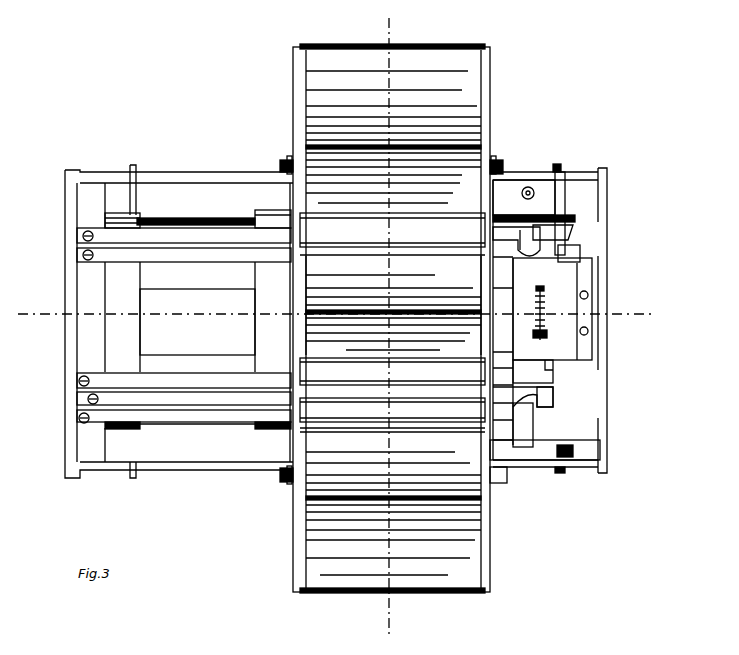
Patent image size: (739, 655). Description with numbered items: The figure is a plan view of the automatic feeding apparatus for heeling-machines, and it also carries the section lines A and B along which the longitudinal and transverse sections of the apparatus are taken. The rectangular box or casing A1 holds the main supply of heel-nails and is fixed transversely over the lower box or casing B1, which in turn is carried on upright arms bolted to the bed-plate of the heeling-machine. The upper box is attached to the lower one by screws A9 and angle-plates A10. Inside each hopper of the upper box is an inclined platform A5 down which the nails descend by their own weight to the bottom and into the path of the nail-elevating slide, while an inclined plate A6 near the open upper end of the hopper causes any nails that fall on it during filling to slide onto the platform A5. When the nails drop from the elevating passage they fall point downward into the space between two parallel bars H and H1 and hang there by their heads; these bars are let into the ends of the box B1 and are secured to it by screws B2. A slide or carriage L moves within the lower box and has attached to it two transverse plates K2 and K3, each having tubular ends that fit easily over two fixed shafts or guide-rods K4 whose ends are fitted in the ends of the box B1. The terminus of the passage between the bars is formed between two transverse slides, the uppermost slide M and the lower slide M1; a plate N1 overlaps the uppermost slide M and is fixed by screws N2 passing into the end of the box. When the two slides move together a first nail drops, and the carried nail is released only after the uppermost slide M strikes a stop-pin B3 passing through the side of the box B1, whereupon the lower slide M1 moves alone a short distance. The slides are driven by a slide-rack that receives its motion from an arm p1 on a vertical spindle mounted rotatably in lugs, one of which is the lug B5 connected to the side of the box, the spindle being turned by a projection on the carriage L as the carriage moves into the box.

The section line A A is at (334, 316).
The section line B B is at (387, 326).
The rectangular box or casing A1 is at (293, 66).
The inclined platform A5 is at (440, 55).
The inclined plate A6 is at (392, 321).
The screws A9 is at (285, 168).
The angle-plates A10 is at (290, 165).
The box or casing B1 is at (607, 190).
The screws B2 is at (83, 238).
The stop-pin B3 is at (560, 473).
The lug B5 is at (529, 209).
The parallel bar H is at (184, 326).
The parallel bar H1 is at (184, 326).
The transverse plate K2 is at (122, 321).
The transverse plate K3 is at (267, 317).
The fixed shafts or guide-rods K4 is at (232, 216).
The slide or carriage L is at (197, 322).
The uppermost transverse slide M is at (590, 233).
The lower transverse slide M1 is at (568, 253).
The plate N1 is at (587, 278).
The screws N2 is at (590, 296).
The arm p1 is at (561, 182).